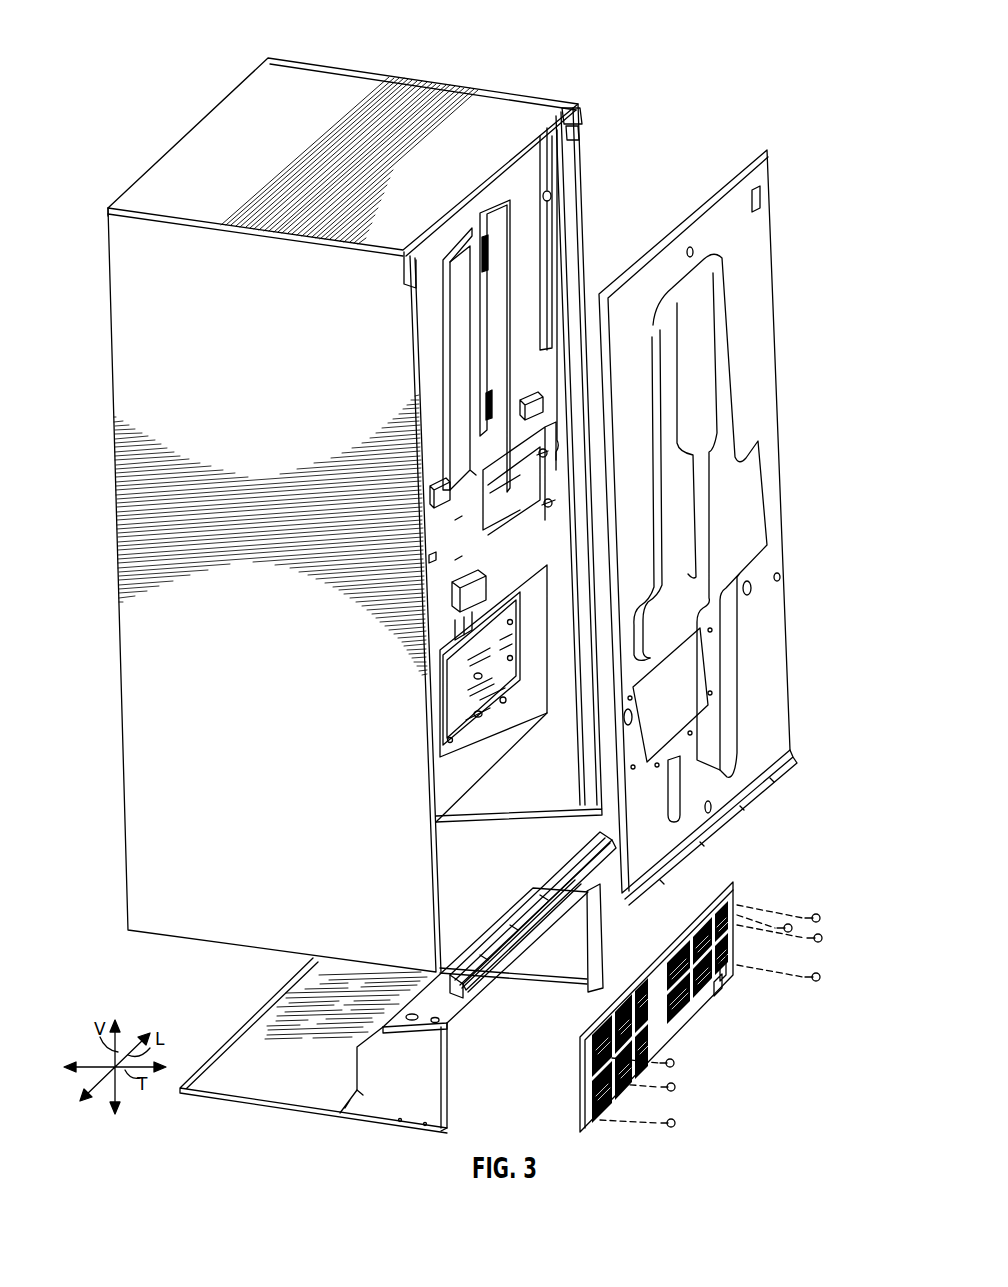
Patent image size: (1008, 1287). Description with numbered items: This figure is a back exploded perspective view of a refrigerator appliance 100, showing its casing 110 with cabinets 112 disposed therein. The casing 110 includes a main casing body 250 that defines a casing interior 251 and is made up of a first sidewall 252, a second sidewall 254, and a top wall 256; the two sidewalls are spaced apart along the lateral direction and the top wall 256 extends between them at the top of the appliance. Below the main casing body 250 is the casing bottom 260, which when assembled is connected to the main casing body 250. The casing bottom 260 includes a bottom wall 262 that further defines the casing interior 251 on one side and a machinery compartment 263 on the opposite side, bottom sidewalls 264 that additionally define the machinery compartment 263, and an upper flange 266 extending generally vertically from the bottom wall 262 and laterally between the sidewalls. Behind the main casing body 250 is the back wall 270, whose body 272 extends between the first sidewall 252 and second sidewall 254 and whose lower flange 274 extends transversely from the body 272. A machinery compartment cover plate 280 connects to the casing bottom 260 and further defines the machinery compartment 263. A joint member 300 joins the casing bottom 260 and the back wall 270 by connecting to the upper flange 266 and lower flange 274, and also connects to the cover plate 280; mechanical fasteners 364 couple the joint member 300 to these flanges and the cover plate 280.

The refrigerator appliance 100 is at (122, 82).
The casing 110 is at (604, 130).
The cabinets 112 is at (542, 204).
The main casing body 250 is at (207, 110).
The casing interior 251 is at (563, 783).
The first sidewall 252 is at (138, 275).
The second sidewall 254 is at (583, 252).
The top wall 256 is at (484, 114).
The casing bottom 260 is at (205, 1005).
The bottom wall 262 is at (263, 1083).
The machinery compartment 263 is at (508, 1033).
The bottom sidewalls 264 is at (583, 933).
The upper flange 266 is at (494, 983).
The back wall 270 is at (803, 406).
The body 272 is at (752, 328).
The lower flange 274 is at (724, 820).
The machinery compartment cover plate 280 is at (744, 882).
The joint member 300 is at (541, 873).
The mechanical fasteners 364 is at (811, 914).